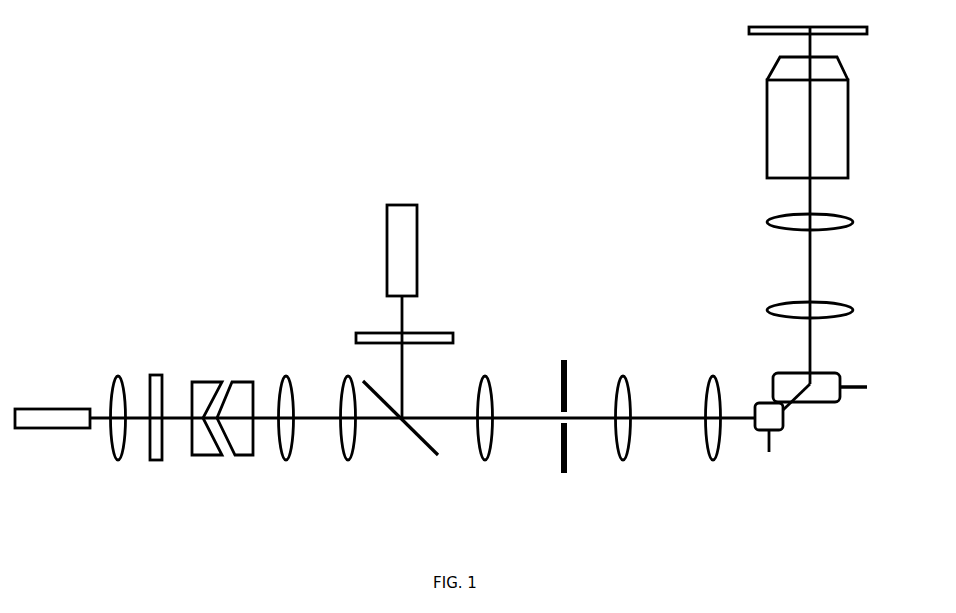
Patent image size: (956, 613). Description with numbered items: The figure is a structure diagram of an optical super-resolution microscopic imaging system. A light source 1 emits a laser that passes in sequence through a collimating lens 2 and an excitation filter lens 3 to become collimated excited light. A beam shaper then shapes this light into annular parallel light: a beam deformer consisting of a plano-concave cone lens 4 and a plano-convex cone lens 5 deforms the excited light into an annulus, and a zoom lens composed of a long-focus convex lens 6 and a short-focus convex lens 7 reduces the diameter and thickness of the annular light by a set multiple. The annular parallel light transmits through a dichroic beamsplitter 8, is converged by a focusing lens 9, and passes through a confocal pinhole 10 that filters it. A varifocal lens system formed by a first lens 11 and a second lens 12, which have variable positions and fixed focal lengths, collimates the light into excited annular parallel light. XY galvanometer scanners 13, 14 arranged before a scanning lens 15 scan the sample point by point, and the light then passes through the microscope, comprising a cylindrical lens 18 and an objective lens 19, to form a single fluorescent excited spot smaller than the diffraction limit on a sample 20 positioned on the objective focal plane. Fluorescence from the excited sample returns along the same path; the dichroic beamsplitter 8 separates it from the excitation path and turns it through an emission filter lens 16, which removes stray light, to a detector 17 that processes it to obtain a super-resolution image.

The light source 1 is at (52, 462).
The collimating lens 2 is at (118, 445).
The excitation filter lens 3 is at (156, 445).
The plano-concave cone lens 4 is at (207, 448).
The plano-convex cone lens 5 is at (235, 448).
The long-focus convex lens 6 is at (286, 445).
The short-focus convex lens 7 is at (348, 445).
The dichroic beamsplitter 8 is at (400, 405).
The focusing lens 9 is at (485, 445).
The confocal pinhole 10 is at (564, 437).
The first lens 11 is at (629, 445).
The second lens 12 is at (717, 445).
The XY galvanometer scanner 13 is at (770, 459).
The XY galvanometer scanner 14 is at (847, 391).
The scanning lens 15 is at (843, 311).
The emission filter lens 16 is at (383, 337).
The detector 17 is at (365, 250).
The cylindrical lens 18 is at (843, 222).
The objective lens 19 is at (841, 117).
The sample 20 is at (832, 33).